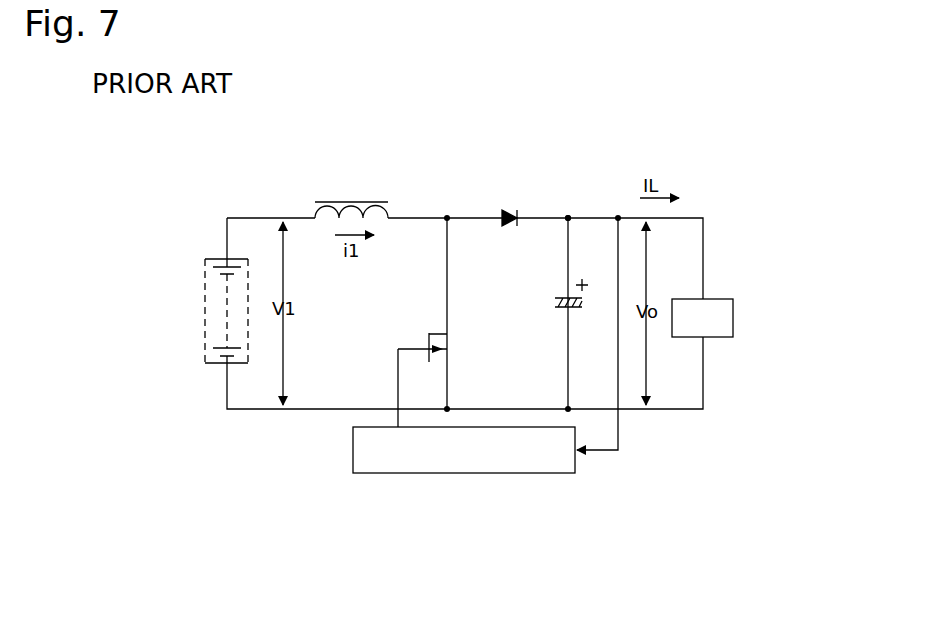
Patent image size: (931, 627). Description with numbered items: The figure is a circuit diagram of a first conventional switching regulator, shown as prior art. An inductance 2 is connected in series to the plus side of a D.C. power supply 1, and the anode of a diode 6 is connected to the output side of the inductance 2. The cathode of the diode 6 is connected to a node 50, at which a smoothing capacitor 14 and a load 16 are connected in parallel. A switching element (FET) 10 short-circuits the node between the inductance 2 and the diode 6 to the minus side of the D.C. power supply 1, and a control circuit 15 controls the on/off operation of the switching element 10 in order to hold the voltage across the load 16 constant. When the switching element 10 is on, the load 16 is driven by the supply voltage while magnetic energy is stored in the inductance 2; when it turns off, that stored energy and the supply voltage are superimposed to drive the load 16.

The D.C. power supply 1 is at (205, 346).
The inductance 2 is at (370, 202).
The diode 6 is at (502, 212).
The switching element (FET) 10 is at (427, 344).
The smoothing capacitor 14 is at (558, 308).
The control circuit 15 is at (577, 460).
The load 16 is at (735, 302).
The node 50 is at (570, 215).